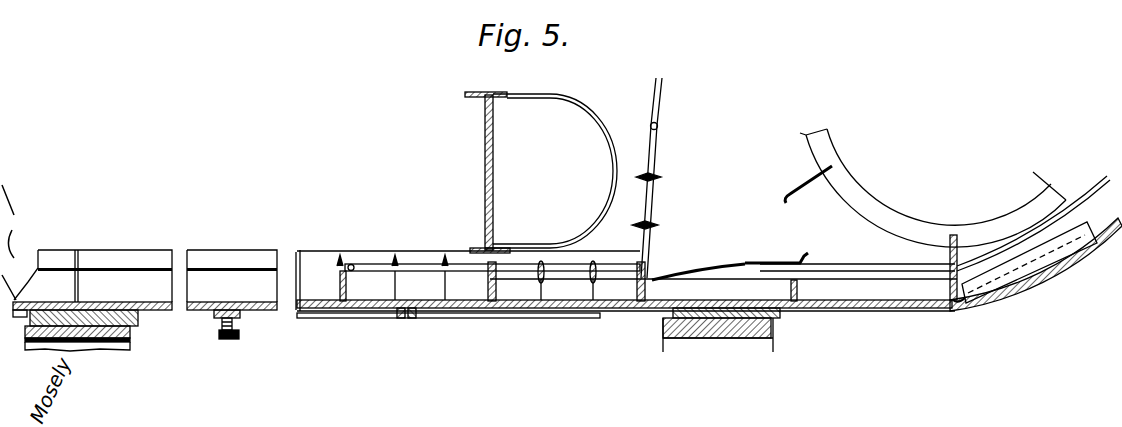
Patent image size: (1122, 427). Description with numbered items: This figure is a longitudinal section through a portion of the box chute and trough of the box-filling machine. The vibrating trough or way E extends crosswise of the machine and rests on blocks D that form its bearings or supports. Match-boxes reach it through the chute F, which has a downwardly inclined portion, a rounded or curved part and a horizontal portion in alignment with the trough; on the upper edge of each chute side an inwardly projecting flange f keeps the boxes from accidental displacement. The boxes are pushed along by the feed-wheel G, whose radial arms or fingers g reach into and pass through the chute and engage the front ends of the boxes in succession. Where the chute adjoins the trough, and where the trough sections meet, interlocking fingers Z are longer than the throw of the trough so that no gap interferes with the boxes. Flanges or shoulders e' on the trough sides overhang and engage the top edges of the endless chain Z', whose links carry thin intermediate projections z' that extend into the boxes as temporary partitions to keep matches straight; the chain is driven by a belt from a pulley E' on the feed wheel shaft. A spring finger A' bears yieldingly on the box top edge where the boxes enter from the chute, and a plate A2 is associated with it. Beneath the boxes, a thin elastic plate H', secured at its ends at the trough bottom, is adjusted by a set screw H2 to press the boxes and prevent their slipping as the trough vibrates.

The vibrating trough or way E is at (93, 266).
The interlocking fingers Z is at (417, 300).
The blocks D is at (130, 339).
The flanges or shoulders e' is at (232, 264).
The set screw H2 is at (228, 335).
The thin elastic plate H' is at (448, 324).
The chute F is at (709, 273).
The endless chain Z' is at (503, 178).
The intermediate projections z' is at (510, 226).
The pulley E' is at (541, 172).
The spring finger A' is at (698, 256).
The slotted plate A2 is at (775, 266).
The inwardly projecting flange f is at (866, 270).
The radial arms or fingers g is at (826, 174).
The feed-wheel G is at (933, 188).